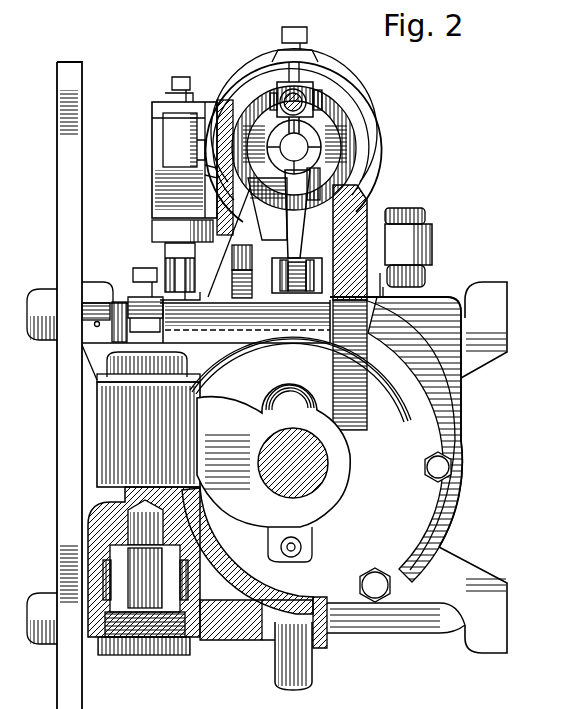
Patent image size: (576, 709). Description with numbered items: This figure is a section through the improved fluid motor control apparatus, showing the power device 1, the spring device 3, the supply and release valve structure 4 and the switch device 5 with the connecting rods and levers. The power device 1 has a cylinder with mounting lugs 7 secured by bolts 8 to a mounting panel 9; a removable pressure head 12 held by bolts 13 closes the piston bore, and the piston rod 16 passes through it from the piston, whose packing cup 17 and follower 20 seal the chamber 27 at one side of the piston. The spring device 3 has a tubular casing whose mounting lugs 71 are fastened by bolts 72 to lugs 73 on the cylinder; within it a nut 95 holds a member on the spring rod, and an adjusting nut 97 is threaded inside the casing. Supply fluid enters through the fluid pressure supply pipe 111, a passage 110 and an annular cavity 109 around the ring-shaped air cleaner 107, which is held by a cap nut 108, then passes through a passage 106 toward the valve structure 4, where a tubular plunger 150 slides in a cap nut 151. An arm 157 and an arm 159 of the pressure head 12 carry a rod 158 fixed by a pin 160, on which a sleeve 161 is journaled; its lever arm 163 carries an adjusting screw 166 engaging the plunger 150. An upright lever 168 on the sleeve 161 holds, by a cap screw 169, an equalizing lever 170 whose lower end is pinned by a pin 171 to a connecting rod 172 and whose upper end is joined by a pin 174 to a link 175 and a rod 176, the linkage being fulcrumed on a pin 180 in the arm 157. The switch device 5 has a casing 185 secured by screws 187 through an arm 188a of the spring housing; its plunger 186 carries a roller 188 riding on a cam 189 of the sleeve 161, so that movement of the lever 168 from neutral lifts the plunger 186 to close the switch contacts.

The power device 1 is at (352, 607).
The spring device 3 is at (375, 114).
The supply and release valve structure 4 is at (100, 425).
The switch device 5 is at (152, 107).
The mounting lugs 7 is at (90, 292).
The bolts 8 is at (42, 303).
The mounting panel 9 is at (63, 75).
The pressure head 12 is at (441, 409).
The bolts 13 is at (448, 465).
The piston rod 16 is at (302, 437).
The packing cup 17 is at (233, 590).
The follower 20 is at (242, 466).
The chamber 27 is at (218, 505).
The mounting lugs 71 is at (432, 238).
The bolts 72 is at (420, 214).
The lugs 73 is at (420, 258).
The nut 95 is at (323, 141).
The adjusting nut 97 is at (345, 105).
The passage 106 is at (140, 521).
The air cleaner 107 is at (122, 565).
The cap nut 108 is at (158, 653).
The annular cavity 109 is at (107, 576).
The passage 110 is at (254, 614).
The fluid pressure supply pipe 111 is at (312, 672).
The tubular plunger 150 is at (132, 357).
The cap nut 151 is at (140, 362).
The arm 157 is at (352, 188).
The rod 158 is at (207, 380).
The arm 159 is at (100, 345).
The pin 160 is at (96, 320).
The sleeve 161 is at (270, 357).
The lever arm 163 is at (135, 301).
The adjusting screw 166 is at (152, 241).
The lever 168 is at (250, 192).
The cap screw 169 is at (307, 192).
The equalizing lever 170 is at (298, 215).
The pin 171 is at (322, 274).
The connecting rod 172 is at (320, 260).
The pin 174 is at (327, 100).
The link 175 is at (305, 88).
The rod 176 is at (322, 100).
The pin 180 is at (389, 702).
The casing 185 is at (155, 135).
The plunger 186 is at (155, 232).
The screws 187 is at (215, 172).
The roller 188 is at (226, 253).
The arm 188a is at (205, 150).
The cam 189 is at (232, 272).